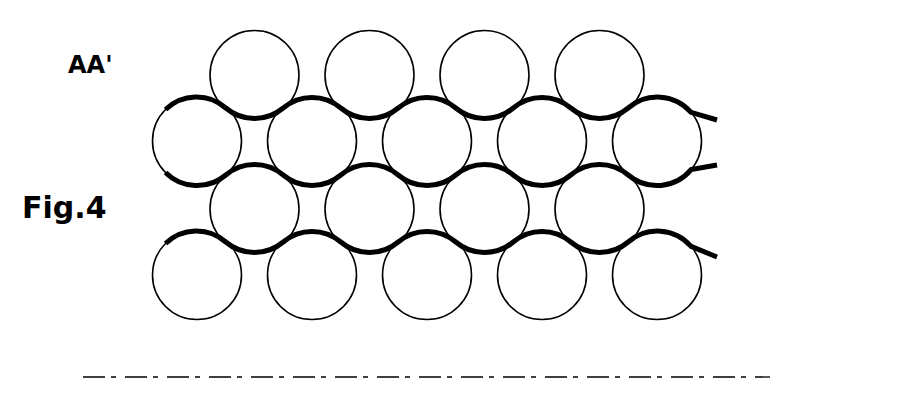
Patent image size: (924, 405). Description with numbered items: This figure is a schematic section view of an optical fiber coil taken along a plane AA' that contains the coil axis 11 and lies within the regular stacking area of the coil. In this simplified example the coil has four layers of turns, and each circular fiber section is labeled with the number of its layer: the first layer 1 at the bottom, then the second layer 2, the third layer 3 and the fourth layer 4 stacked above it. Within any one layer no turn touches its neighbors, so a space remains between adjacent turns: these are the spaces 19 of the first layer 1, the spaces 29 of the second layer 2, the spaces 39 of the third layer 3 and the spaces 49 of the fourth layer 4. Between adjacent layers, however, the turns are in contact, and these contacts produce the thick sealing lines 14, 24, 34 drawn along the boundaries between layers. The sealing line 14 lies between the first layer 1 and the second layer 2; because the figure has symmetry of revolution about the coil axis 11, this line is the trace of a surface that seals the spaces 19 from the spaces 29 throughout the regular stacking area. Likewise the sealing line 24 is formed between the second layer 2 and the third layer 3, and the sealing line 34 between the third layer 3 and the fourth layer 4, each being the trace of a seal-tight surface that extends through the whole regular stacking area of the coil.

The first layer 1 is at (190, 287).
The second layer 2 is at (262, 221).
The third layer 3 is at (190, 153).
The fourth layer 4 is at (262, 87).
The axis of the coil 11 is at (738, 375).
The sealing line 14 is at (705, 252).
The spaces between adjacent turns of the first layer 19 is at (268, 312).
The sealing line 24 is at (705, 167).
The spaces between adjacent turns of the second layer 29 is at (299, 229).
The sealing line 34 is at (705, 117).
The spaces between adjacent turns of the third layer 39 is at (268, 159).
The spaces between adjacent turns of the fourth layer 49 is at (299, 52).